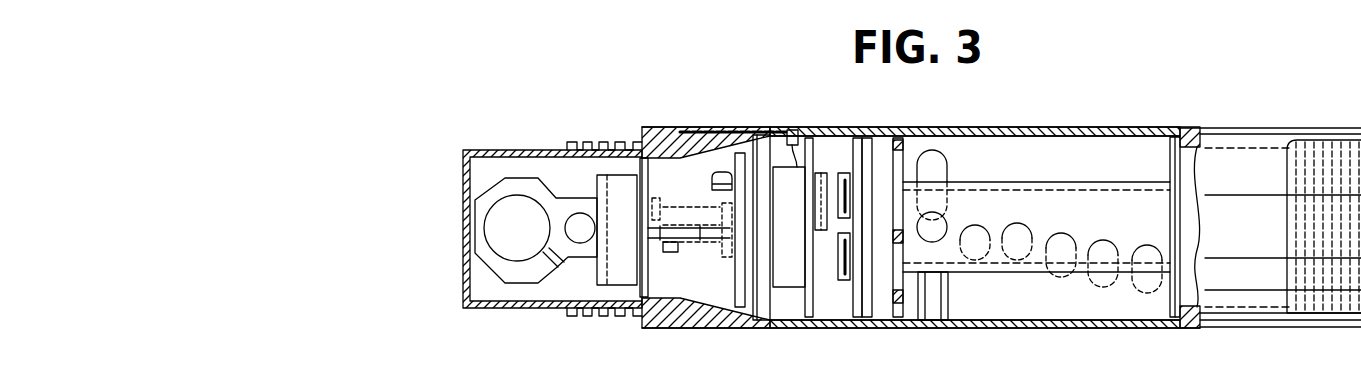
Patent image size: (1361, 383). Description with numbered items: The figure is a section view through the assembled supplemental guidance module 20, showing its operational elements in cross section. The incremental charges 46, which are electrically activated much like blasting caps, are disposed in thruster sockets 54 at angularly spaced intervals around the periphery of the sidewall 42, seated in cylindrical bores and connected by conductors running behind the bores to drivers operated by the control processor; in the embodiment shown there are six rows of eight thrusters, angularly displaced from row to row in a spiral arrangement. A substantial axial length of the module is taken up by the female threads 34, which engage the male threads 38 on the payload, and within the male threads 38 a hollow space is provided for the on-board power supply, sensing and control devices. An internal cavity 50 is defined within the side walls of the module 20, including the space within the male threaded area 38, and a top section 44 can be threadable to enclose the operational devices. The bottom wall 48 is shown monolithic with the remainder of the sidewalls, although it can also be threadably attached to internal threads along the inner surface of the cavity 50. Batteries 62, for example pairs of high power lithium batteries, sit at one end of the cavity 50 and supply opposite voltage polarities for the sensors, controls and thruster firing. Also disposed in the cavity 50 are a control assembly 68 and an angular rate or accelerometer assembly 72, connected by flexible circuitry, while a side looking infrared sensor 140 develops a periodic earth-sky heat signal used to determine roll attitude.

The supplemental guidance module 20 is at (1068, 118).
The female threads 34 is at (1318, 128).
The male threads 38 is at (564, 313).
The sidewall 42 is at (1045, 328).
The top section 44 is at (645, 127).
The incremental charges 46 is at (973, 225).
The bottom wall 48 is at (463, 260).
The internal cavity 50 is at (837, 155).
The thruster sockets 54 is at (1102, 241).
The batteries 62 is at (512, 250).
The control assembly 68 is at (828, 302).
The angular rate or accelerometer assembly 72 is at (583, 222).
The side looking infrared sensor 140 is at (787, 128).